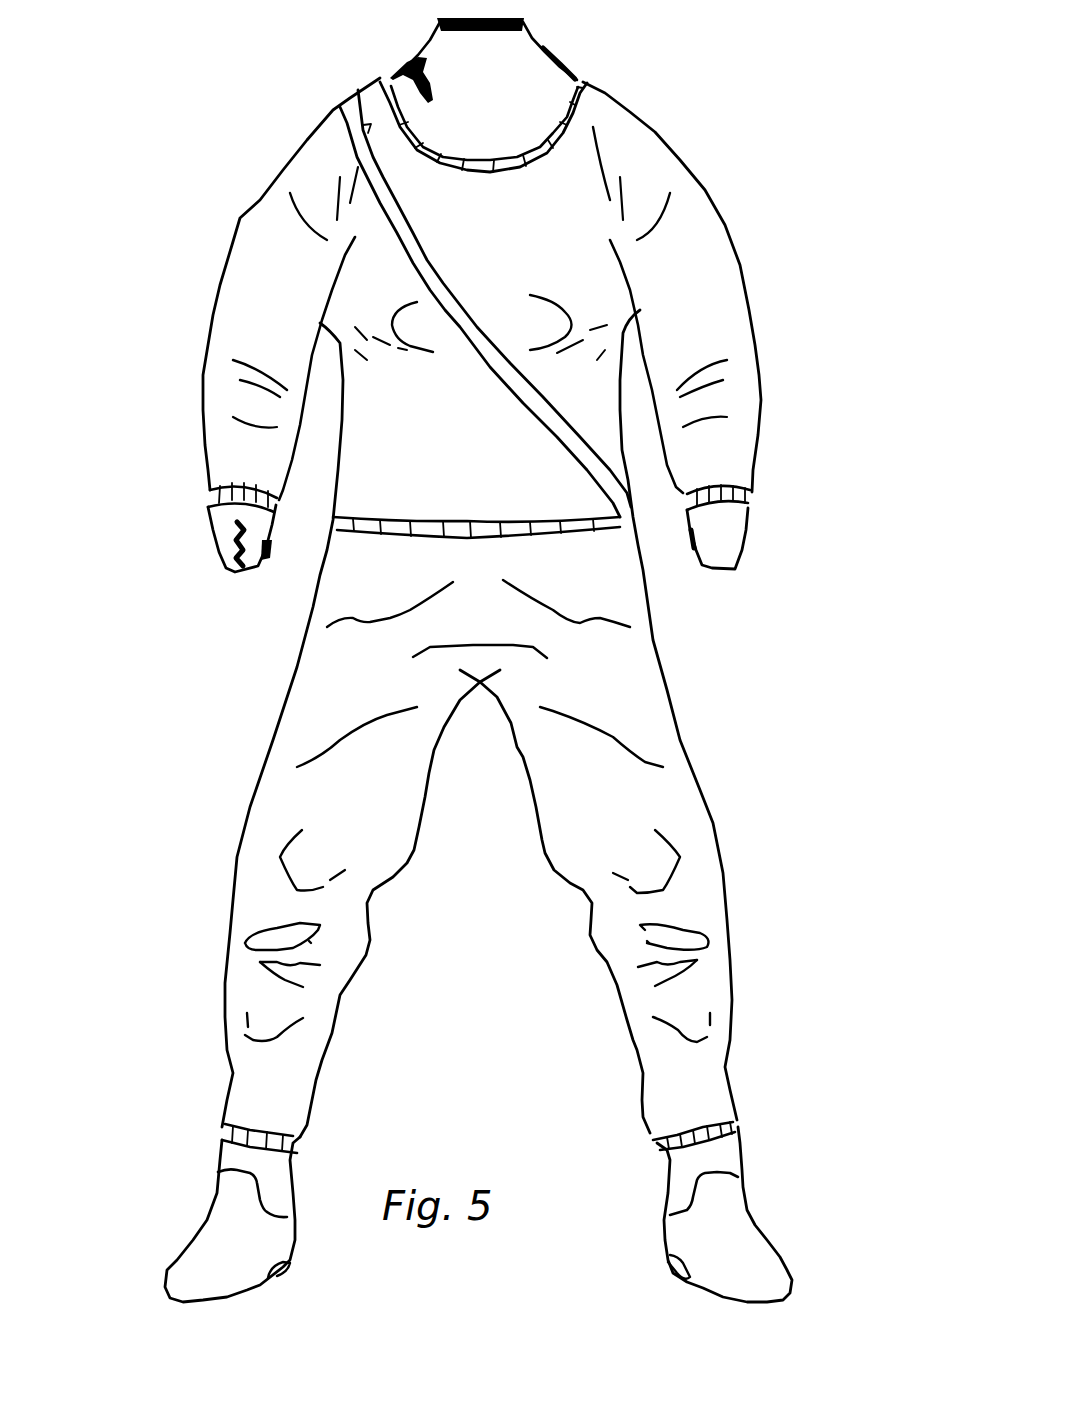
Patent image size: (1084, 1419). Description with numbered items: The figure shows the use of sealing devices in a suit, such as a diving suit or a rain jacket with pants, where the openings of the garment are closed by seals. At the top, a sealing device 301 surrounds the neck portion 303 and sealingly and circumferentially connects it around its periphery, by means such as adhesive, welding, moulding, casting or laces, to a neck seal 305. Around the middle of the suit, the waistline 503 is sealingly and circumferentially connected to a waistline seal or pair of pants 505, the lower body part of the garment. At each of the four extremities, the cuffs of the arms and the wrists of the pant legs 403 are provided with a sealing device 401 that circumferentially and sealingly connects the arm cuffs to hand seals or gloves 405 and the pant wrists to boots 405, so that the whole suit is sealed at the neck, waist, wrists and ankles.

The sealing device 301 is at (608, 83).
The neck portion 303 is at (503, 214).
The neck seal 305 is at (500, 131).
The sealing device 401 is at (195, 507).
The cuffs of the arms / wrists of the legs 403 is at (262, 481).
The hand seal / glove / boot 405 is at (258, 534).
The waistline 503 is at (503, 505).
The waistline seal / pair of pants 505 is at (420, 590).